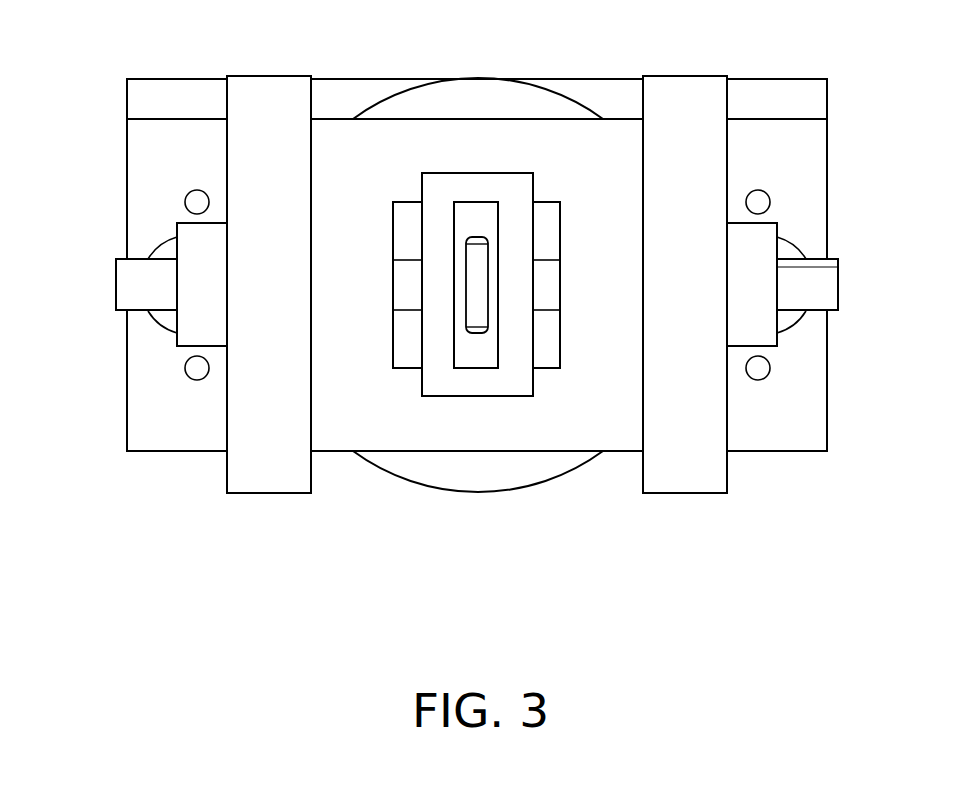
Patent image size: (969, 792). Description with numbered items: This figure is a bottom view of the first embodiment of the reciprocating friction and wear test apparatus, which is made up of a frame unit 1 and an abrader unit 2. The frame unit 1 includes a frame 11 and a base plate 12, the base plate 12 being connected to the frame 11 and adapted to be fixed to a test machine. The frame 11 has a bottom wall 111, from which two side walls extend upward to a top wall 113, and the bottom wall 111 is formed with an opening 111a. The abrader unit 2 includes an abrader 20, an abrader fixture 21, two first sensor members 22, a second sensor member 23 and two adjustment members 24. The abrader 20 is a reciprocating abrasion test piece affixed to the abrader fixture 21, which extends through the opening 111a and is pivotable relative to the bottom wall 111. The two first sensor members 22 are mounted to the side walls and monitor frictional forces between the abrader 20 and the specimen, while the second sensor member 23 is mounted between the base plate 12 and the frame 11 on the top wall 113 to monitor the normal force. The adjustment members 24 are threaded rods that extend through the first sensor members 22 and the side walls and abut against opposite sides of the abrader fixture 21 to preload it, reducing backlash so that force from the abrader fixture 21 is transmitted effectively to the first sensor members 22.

The frame unit 1 is at (426, 280).
The frame 11 is at (621, 456).
The bottom wall 111 is at (392, 435).
The opening 111a is at (548, 225).
The top wall 113 is at (813, 188).
The base plate 12 is at (790, 78).
The abrader unit 2 is at (849, 313).
The abrader 20 is at (480, 307).
The abrader fixture 21 is at (477, 396).
The first sensor members 22 is at (270, 493).
The second sensor member 23 is at (567, 96).
The adjustment members 24 is at (115, 287).